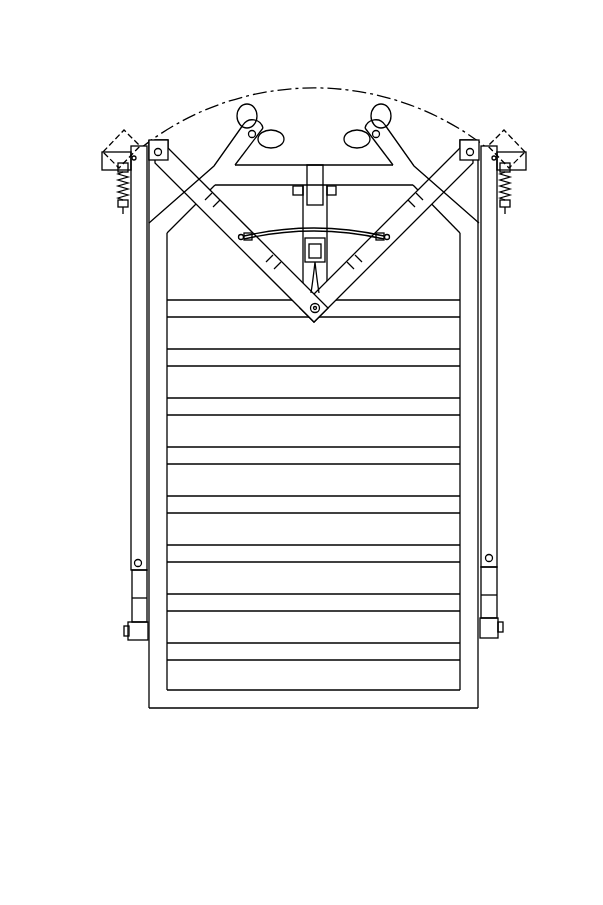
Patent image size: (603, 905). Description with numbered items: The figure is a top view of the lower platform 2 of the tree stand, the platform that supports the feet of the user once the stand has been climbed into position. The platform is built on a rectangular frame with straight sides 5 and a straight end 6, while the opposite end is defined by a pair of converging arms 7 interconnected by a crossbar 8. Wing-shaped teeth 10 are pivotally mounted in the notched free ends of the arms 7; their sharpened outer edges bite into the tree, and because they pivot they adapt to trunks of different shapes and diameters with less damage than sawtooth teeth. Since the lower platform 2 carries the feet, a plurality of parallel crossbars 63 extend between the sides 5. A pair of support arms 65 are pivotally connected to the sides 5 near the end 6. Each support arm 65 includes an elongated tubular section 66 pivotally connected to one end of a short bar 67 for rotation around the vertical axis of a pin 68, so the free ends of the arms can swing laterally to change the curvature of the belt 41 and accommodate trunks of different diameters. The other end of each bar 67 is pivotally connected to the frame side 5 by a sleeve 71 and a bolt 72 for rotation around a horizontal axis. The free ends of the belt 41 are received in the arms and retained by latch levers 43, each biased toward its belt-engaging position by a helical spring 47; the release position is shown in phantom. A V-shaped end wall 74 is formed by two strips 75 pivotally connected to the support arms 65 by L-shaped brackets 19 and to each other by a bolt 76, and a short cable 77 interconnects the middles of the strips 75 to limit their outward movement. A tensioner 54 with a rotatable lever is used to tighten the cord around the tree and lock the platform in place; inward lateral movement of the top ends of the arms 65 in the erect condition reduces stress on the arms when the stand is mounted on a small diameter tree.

The lower platform 2 is at (146, 742).
The sides 5 is at (314, 448).
The end 6 is at (383, 702).
The arms 7 is at (216, 170).
The crossbar 8 is at (328, 168).
The teeth 10 is at (240, 105).
The brackets 19 is at (152, 142).
The belt 41 is at (301, 92).
The lever 43 is at (104, 151).
The helical spring 47 is at (118, 186).
The tensioner 54 is at (296, 272).
The crossbars 63 is at (192, 312).
The support arms 65 is at (130, 412).
The tubular section 66 is at (131, 300).
The bar 67 is at (133, 583).
The pin 68 is at (136, 561).
The sleeve 71 is at (140, 640).
The bolt 72 is at (125, 630).
The end wall 74 is at (314, 201).
The strips 75 is at (212, 218).
The bolt 76 is at (338, 322).
The cable 77 is at (290, 229).